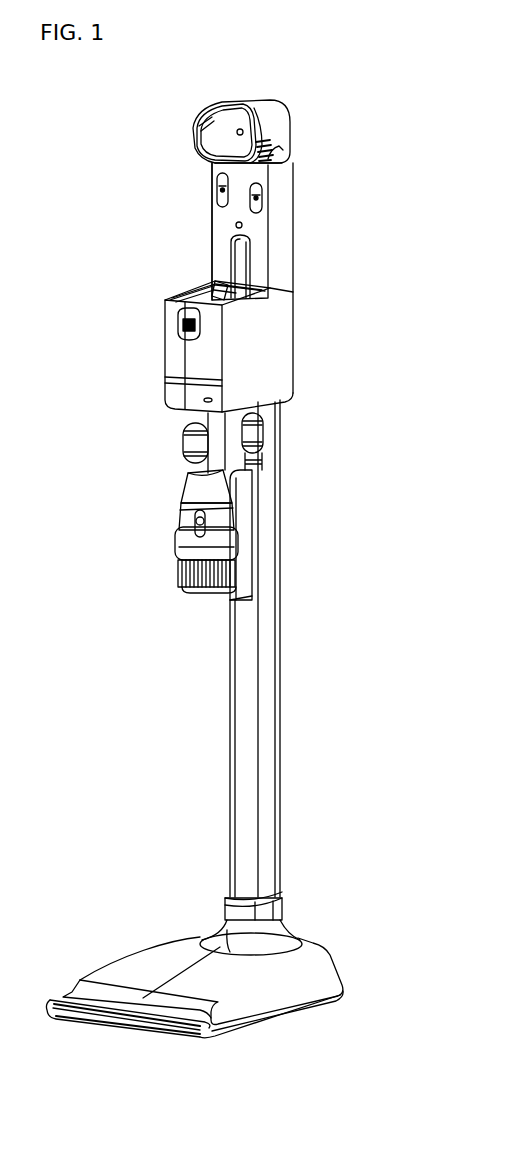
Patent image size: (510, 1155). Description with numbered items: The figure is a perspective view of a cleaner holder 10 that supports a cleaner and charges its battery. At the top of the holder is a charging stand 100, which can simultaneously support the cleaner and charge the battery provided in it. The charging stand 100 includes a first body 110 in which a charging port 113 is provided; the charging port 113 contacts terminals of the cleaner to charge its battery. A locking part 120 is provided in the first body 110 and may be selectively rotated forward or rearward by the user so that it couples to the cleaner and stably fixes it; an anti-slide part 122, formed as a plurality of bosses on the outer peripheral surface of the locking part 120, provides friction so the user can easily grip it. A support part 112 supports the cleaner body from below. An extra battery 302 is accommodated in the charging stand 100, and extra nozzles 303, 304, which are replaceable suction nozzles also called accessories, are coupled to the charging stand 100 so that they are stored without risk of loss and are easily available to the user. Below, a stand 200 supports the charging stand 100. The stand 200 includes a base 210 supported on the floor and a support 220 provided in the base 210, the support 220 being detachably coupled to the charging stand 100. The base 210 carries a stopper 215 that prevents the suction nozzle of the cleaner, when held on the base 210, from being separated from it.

The cleaner holder 10 is at (341, 184).
The charging stand 100 is at (134, 252).
The first body 110 is at (287, 229).
The support part 112 is at (250, 298).
The charging port 113 is at (216, 190).
The locking part 120 is at (247, 113).
The anti-slide part 122 is at (268, 149).
The stand 200 is at (143, 851).
The base 210 is at (327, 970).
The stopper 215 is at (136, 1013).
The support 220 is at (268, 700).
The extra battery 302 is at (190, 306).
The extra nozzle 303 is at (208, 465).
The extra nozzle 304 is at (247, 530).